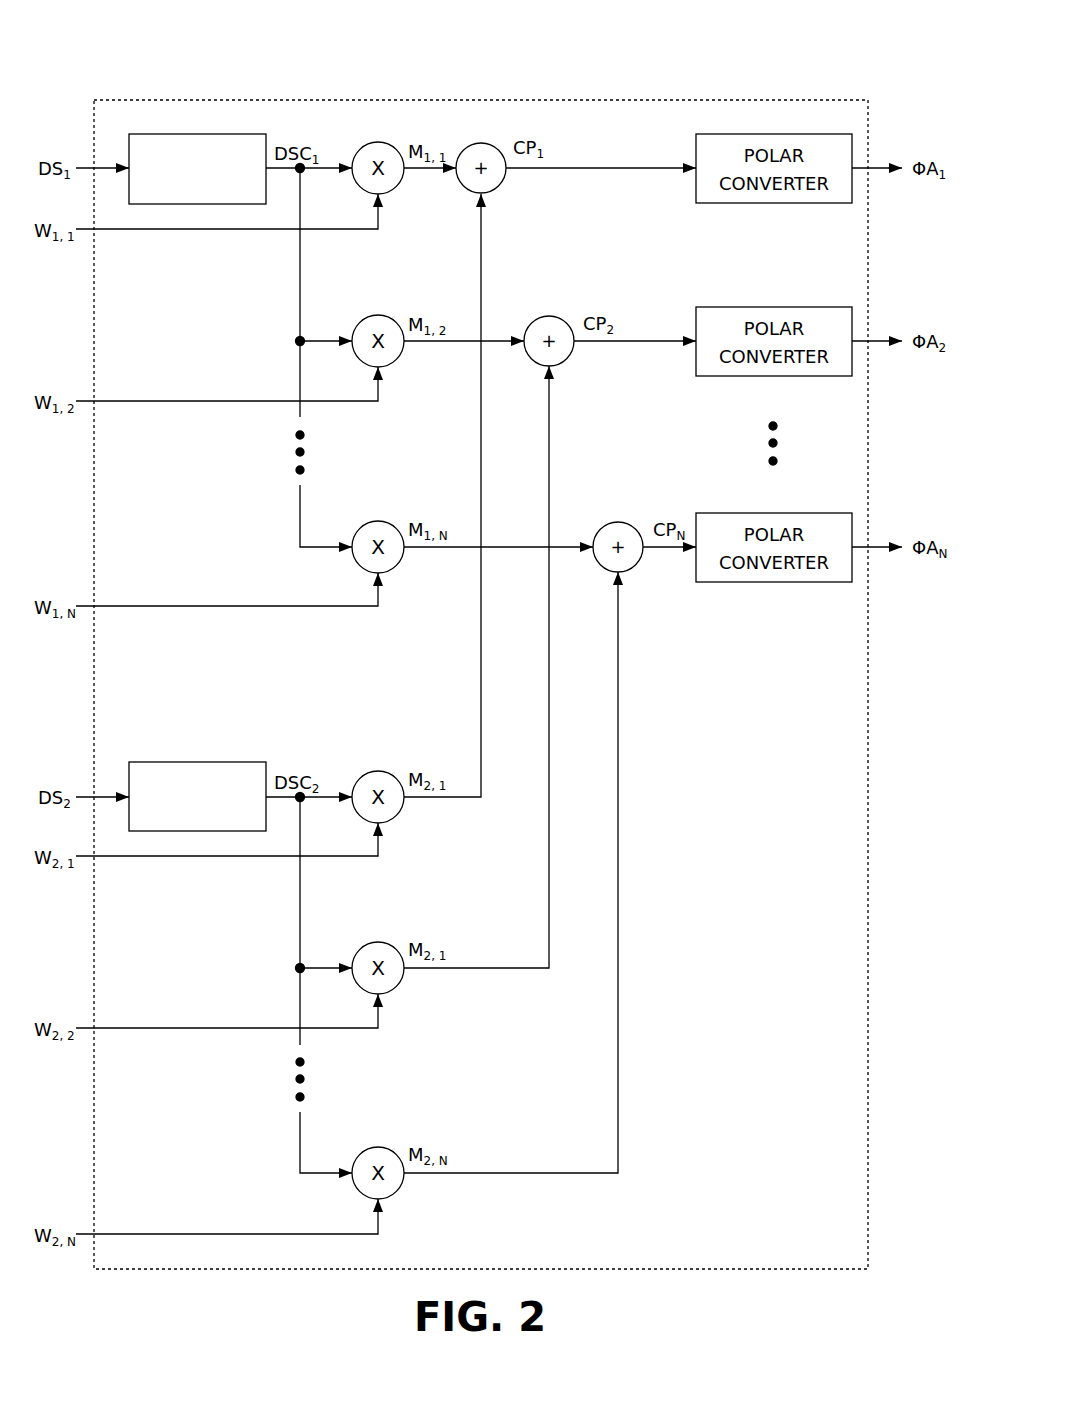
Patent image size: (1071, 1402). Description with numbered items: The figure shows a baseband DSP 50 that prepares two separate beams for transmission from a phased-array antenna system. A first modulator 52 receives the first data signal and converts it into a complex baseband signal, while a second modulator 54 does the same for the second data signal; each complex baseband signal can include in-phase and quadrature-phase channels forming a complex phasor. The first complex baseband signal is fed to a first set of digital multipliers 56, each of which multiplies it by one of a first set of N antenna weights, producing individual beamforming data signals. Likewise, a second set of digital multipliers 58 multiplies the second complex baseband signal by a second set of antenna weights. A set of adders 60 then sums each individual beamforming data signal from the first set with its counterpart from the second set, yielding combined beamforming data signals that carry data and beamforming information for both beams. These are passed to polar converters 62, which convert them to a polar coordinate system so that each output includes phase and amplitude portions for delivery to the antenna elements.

The baseband DSP 50 is at (386, 100).
The first modulator 52 is at (197, 134).
The second modulator 54 is at (197, 762).
The first set of digital multipliers 56 is at (365, 146).
The second set of digital multipliers 58 is at (365, 775).
The adders 60 is at (499, 186).
The polar converters 62 is at (696, 140).